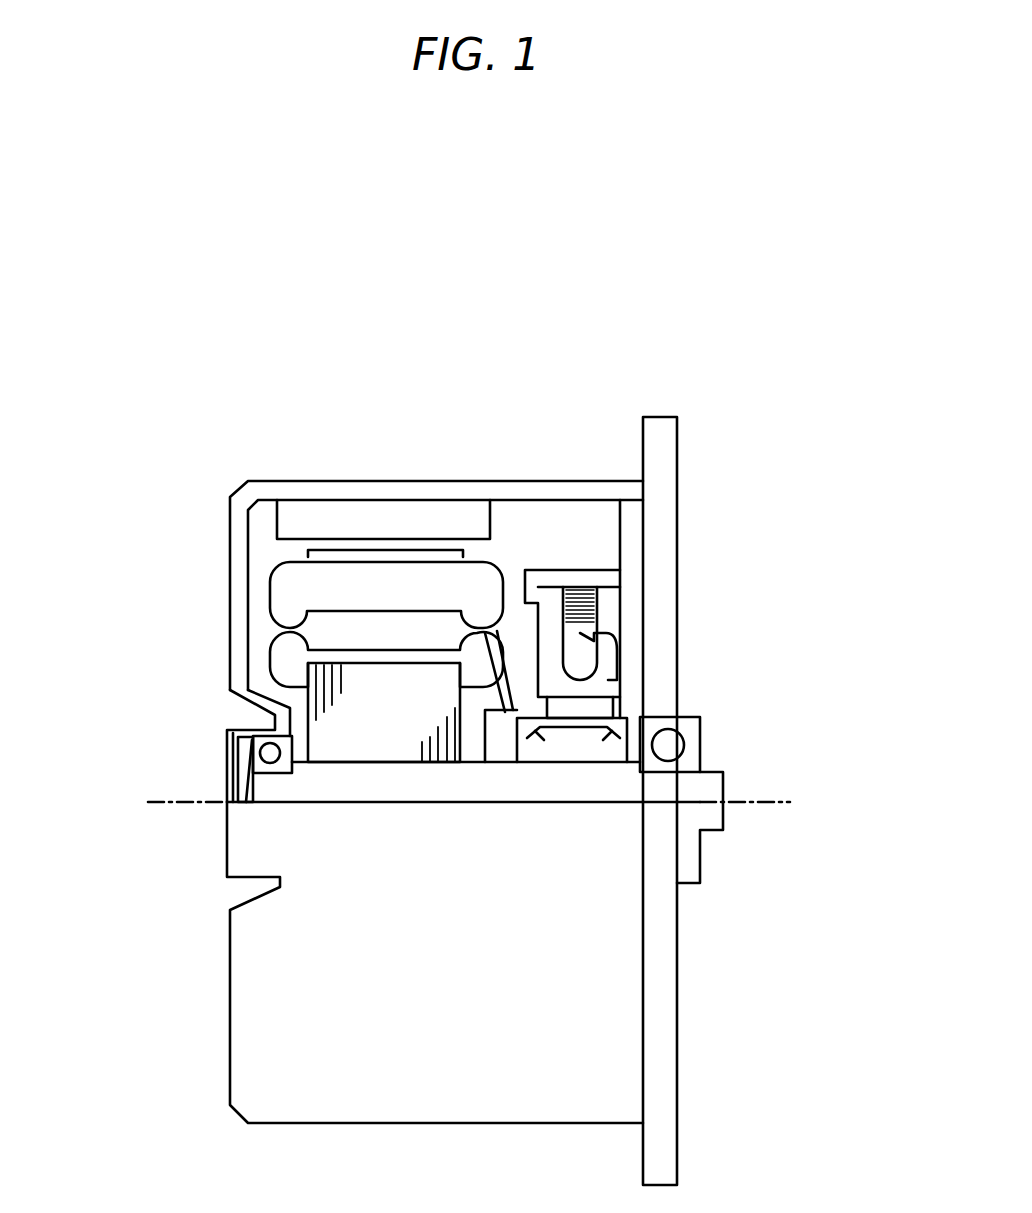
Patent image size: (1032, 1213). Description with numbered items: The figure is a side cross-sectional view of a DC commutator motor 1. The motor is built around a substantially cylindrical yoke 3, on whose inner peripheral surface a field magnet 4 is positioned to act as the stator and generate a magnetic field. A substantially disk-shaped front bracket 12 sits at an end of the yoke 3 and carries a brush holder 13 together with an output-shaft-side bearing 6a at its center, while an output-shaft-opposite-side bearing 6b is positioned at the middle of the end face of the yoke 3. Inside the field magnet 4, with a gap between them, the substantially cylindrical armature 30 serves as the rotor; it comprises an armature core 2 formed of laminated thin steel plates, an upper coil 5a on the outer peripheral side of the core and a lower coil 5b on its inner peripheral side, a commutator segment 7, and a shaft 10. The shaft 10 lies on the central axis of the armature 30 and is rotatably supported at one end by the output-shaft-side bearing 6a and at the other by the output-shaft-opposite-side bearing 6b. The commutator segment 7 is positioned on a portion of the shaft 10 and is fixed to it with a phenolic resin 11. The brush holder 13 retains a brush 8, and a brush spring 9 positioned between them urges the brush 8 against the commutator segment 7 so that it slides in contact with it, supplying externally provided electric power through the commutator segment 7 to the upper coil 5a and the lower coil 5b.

The DC commutator motor 1 is at (430, 308).
The armature core 2 is at (397, 735).
The yoke 3 is at (422, 480).
The field magnet 4 is at (300, 515).
The upper coil 5a is at (308, 588).
The lower coil 5b is at (292, 650).
The output-shaft-side bearing 6a is at (686, 718).
The output-shaft-opposite-side bearing 6b is at (253, 745).
The commutator segment 7 is at (580, 715).
The brush 8 is at (590, 627).
The brush spring 9 is at (583, 585).
The shaft 10 is at (692, 787).
The phenolic resin 11 is at (563, 750).
The front bracket 12 is at (667, 417).
The brush holder 13 is at (548, 610).
The armature 30 is at (403, 548).